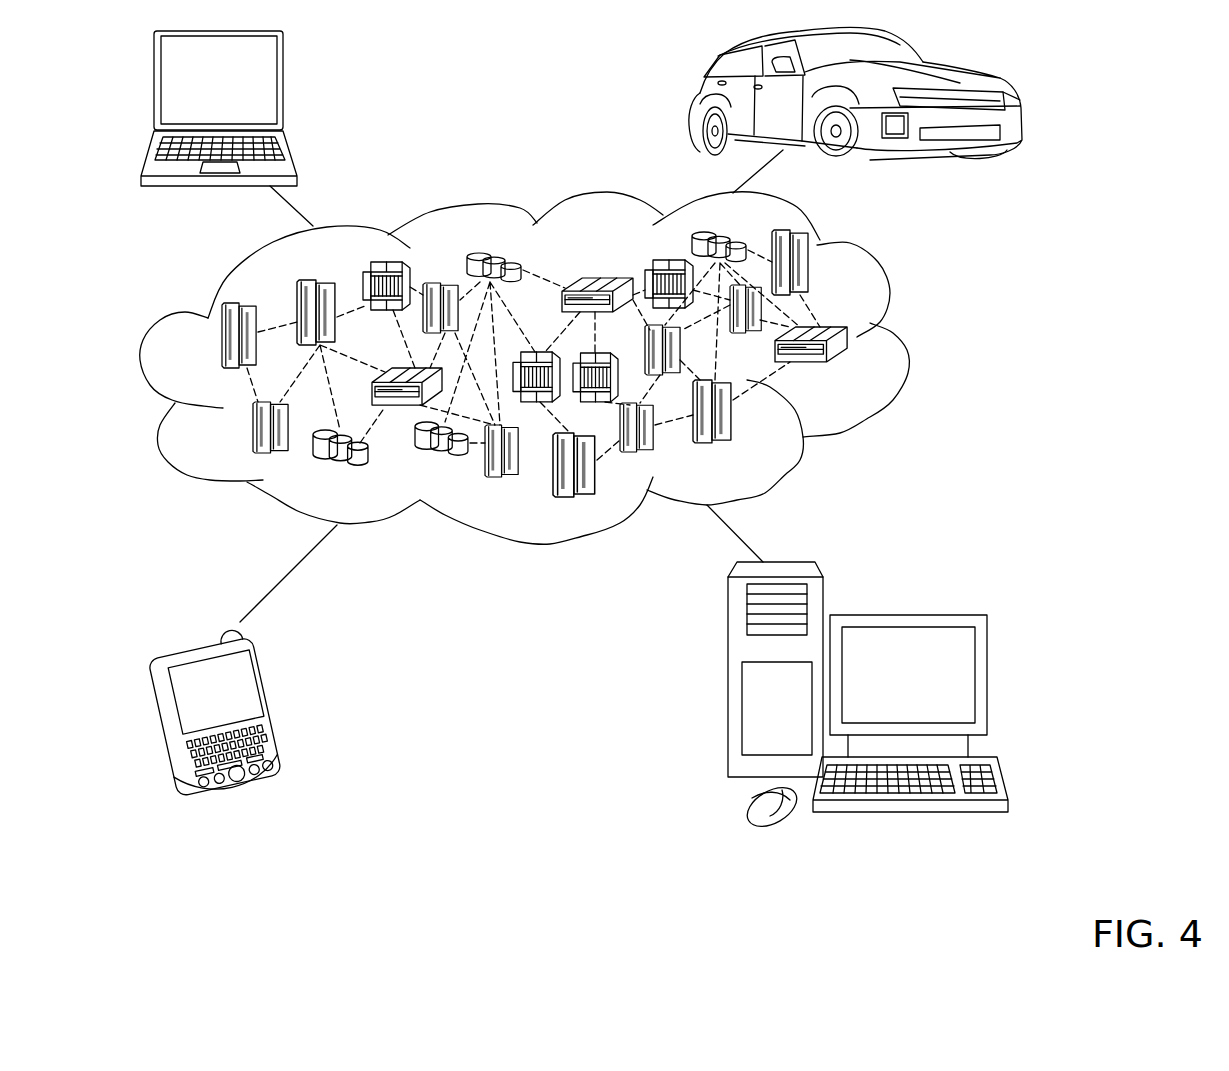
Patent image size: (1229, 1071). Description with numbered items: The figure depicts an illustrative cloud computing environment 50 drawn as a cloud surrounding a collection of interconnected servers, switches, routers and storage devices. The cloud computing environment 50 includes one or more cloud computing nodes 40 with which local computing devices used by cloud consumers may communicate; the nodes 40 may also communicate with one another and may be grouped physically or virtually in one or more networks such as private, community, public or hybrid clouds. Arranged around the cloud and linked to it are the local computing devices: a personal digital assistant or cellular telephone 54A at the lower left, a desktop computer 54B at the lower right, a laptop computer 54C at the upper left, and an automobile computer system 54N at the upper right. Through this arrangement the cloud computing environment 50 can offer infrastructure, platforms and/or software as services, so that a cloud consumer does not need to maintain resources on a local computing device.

The cloud computing environment 50 is at (554, 368).
The cloud computing nodes 40 is at (845, 370).
The personal digital assistant (PDA) or cellular telephone 54A is at (278, 707).
The desktop computer 54B is at (906, 615).
The laptop computer 54C is at (283, 87).
The automobile computer system 54N is at (697, 100).